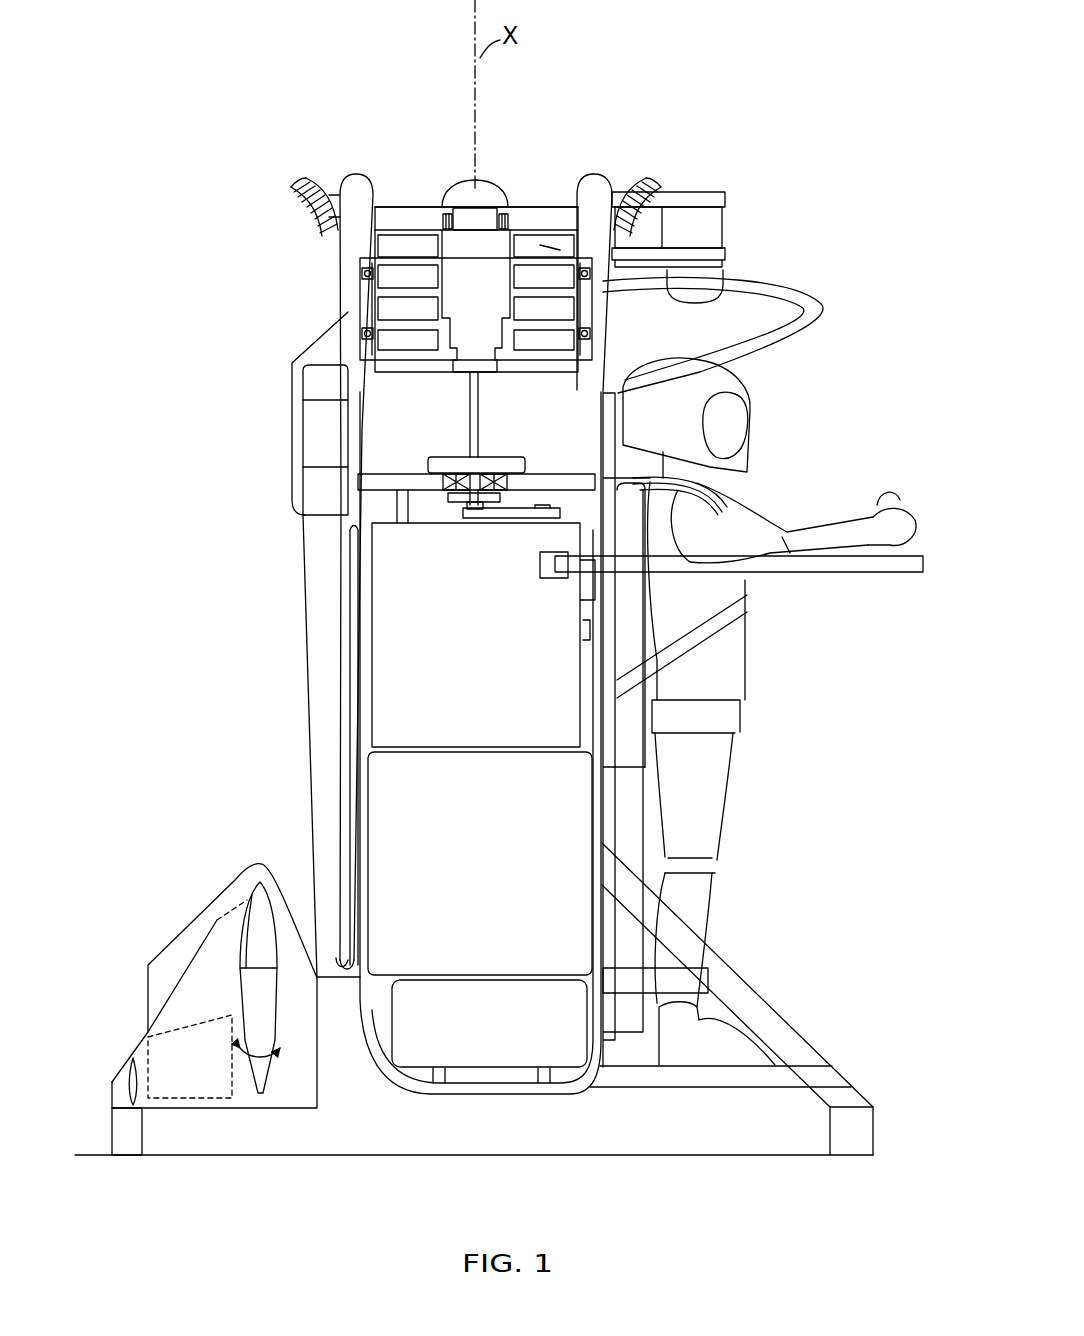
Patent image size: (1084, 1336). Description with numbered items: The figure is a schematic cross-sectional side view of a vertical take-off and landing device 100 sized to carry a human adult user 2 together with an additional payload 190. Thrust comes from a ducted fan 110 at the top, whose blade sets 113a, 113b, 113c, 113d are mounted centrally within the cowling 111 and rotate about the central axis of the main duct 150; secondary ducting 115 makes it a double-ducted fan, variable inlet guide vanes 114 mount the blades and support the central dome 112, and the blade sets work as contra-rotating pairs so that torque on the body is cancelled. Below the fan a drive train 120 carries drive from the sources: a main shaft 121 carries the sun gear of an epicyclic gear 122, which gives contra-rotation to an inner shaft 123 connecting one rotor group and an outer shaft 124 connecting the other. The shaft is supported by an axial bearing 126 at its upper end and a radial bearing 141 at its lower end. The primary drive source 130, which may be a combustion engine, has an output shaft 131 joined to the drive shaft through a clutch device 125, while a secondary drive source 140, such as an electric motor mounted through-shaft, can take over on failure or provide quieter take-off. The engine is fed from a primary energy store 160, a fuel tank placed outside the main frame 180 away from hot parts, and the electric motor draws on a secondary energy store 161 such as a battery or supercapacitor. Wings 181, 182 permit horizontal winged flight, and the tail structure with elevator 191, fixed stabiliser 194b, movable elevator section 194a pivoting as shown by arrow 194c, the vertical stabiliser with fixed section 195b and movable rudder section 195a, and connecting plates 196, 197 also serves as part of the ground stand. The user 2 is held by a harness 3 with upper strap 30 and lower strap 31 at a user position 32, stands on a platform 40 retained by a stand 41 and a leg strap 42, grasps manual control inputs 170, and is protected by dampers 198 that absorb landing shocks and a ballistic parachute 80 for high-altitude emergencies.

The VTOL device 100 is at (630, 152).
The fan 110 is at (407, 190).
The cowling 111 is at (352, 180).
The central dome 112 is at (496, 190).
The blade set 113a is at (560, 250).
The blade set 113b is at (370, 270).
The blade set 113c is at (368, 306).
The blade set 113d is at (370, 346).
The variable inlet guide vanes 114 is at (533, 216).
The secondary ducting 115 is at (305, 183).
The drive train 120 is at (455, 452).
The main shaft 121 is at (470, 406).
The epicyclic gear 122 is at (479, 373).
The inner shaft 123 is at (484, 232).
The outer shaft 124 is at (370, 334).
The clutch device 125 is at (468, 509).
The axial bearing 126 is at (415, 202).
The primary drive source 130 is at (483, 635).
The output shaft 131 is at (552, 519).
The secondary drive source 140 is at (430, 468).
The radial bearing 141 is at (449, 501).
The main duct 150 is at (346, 390).
The primary energy store 160 is at (640, 834).
The secondary energy store 161 is at (480, 863).
The manual control inputs 170 is at (904, 576).
The main frame 180 is at (496, 1087).
The wing 181 is at (318, 762).
The wing 182 is at (338, 962).
The payload 190 is at (489, 1023).
The elevator 191 is at (130, 1060).
The movable elevator section 194a is at (252, 946).
The fixed stabiliser 194b is at (253, 896).
The arrow 194c is at (258, 1076).
The movable section 195a is at (196, 1073).
The fixed section 195b is at (163, 968).
The connecting plate 196 is at (388, 1073).
The connecting plate 197 is at (341, 1024).
The damper 198 is at (118, 1133).
The user 2 is at (718, 734).
The harness 3 is at (766, 711).
The upper strap 30 is at (720, 490).
The lower strap 31 is at (700, 642).
The user position 32 is at (628, 396).
The platform 40 is at (685, 1078).
The stand 41 is at (775, 1036).
The leg strap 42 is at (662, 990).
The ballistic parachute 80 is at (724, 222).